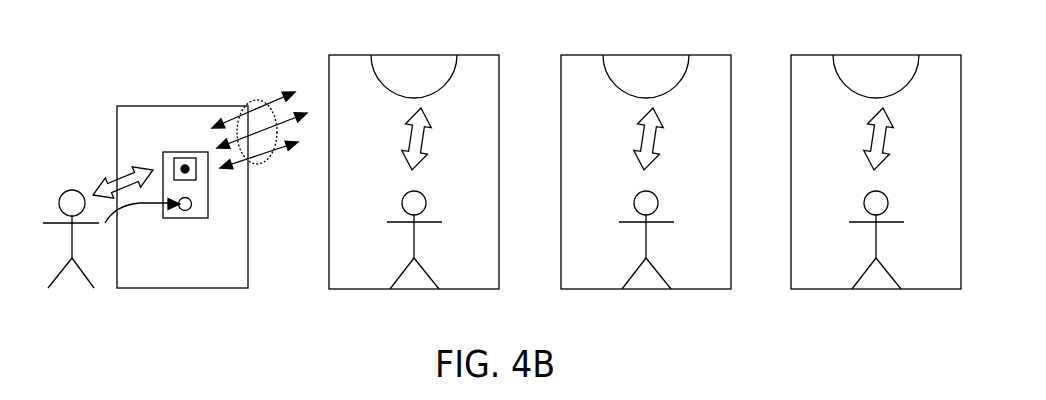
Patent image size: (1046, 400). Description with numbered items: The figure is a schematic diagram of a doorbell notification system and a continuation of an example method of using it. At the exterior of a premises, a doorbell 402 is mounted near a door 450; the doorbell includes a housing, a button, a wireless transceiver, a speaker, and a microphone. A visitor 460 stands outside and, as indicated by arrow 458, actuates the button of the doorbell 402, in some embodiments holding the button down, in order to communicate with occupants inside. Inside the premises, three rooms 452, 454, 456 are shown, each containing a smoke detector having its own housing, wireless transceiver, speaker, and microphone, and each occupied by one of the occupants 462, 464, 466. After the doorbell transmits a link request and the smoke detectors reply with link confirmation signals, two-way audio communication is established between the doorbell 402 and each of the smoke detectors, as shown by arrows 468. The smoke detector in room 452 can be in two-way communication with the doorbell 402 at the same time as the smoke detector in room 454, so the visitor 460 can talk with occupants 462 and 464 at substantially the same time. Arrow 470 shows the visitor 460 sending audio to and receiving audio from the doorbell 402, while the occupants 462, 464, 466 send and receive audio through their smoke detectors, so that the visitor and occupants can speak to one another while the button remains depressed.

The door 450 is at (140, 106).
The doorbell 402 is at (163, 152).
The arrow indicating button actuation 458 is at (137, 204).
The arrow indicating visitor audio 470 is at (123, 173).
The arrows indicating two-way audio communication 468 is at (252, 100).
The visitor 460 is at (77, 298).
The room 452 is at (360, 55).
The room 454 is at (592, 55).
The room 456 is at (822, 55).
The occupant 462 is at (410, 230).
The occupant 464 is at (623, 240).
The occupant 466 is at (853, 240).